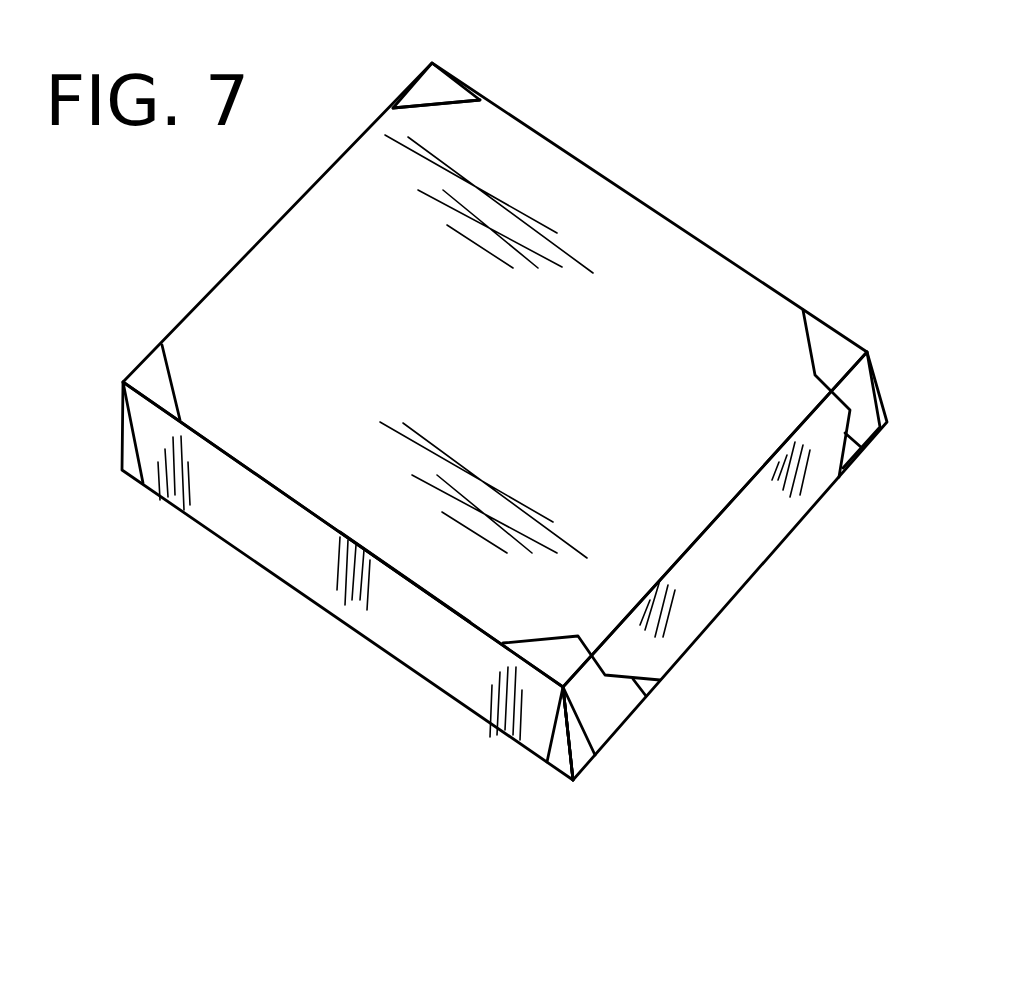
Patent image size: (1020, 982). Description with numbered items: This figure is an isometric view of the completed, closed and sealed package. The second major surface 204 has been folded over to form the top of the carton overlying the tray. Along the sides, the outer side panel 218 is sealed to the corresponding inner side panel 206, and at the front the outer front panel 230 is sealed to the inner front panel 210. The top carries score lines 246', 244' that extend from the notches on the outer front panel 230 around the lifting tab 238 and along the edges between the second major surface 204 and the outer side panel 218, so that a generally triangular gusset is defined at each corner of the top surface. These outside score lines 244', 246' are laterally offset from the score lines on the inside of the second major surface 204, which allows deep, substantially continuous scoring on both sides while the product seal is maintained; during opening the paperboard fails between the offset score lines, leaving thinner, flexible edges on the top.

The second major surface 204 is at (520, 396).
The outer side panel 218 is at (302, 553).
The lifting tab 238 is at (748, 577).
The score line 244' is at (520, 70).
The score line 246' is at (381, 661).
The inner side panel 206 is at (557, 757).
The inner front panel 210 is at (582, 752).
The outer front panel 230 is at (615, 708).